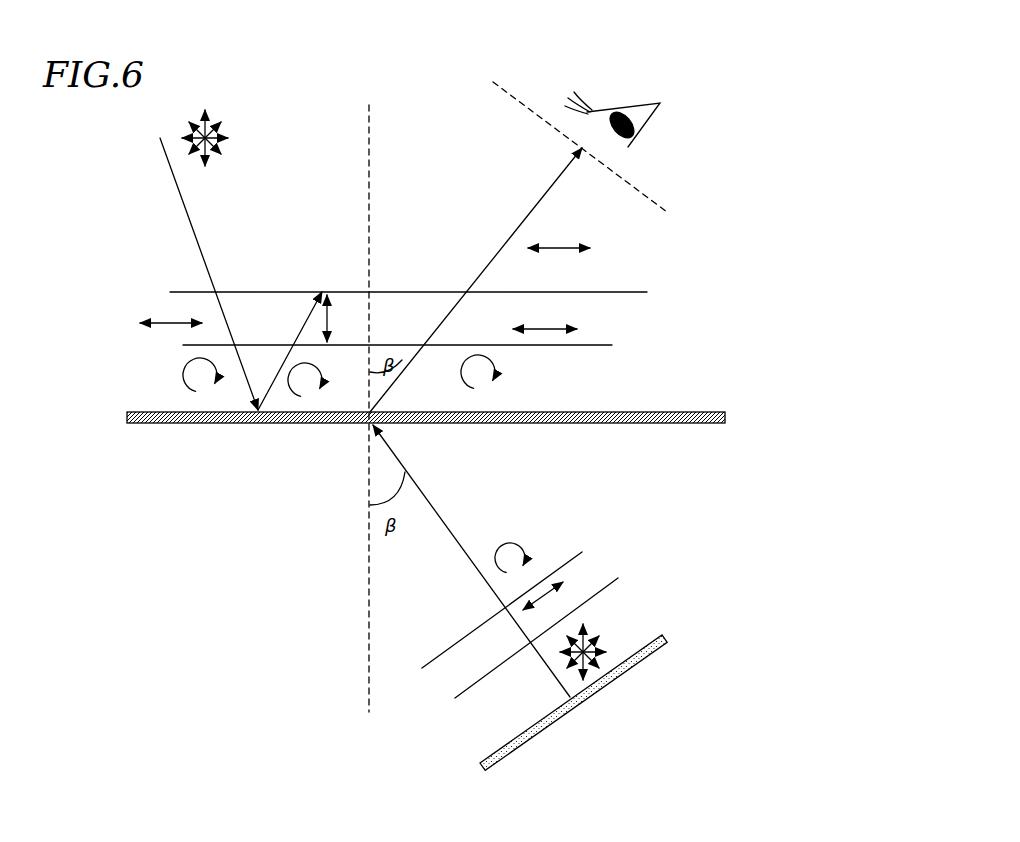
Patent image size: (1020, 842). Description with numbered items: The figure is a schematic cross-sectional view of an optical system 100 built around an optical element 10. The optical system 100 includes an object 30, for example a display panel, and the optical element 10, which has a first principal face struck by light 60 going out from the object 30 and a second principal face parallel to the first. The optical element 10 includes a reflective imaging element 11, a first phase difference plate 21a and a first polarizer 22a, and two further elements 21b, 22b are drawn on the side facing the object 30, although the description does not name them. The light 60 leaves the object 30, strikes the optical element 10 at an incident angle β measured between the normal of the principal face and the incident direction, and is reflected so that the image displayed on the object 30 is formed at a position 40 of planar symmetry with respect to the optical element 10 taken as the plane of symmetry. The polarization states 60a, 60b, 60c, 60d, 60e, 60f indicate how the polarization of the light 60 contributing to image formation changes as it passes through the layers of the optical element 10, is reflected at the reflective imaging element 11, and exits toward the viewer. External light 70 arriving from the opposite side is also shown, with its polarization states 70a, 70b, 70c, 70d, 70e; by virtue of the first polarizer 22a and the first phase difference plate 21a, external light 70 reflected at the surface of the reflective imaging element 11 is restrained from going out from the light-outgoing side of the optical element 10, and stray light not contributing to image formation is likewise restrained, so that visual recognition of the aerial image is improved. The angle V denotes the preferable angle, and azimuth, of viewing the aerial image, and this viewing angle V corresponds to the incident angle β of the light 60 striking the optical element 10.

The optical element 10 is at (772, 262).
The reflective imaging element 11 is at (700, 412).
The first phase difference plate 21a is at (612, 345).
The first polarizer 22a is at (647, 292).
The first retardation layer (lower) 21b is at (582, 552).
The second retardation layer (lower) 22b is at (618, 578).
The object 30 is at (665, 640).
The image forming position 40 is at (667, 212).
The light 60 is at (437, 508).
The polarization state of light 60a is at (601, 649).
The polarization state of light 60b is at (561, 592).
The polarization state of light 60c is at (526, 554).
The polarization state of light 60d is at (496, 374).
The polarization state of light 60e is at (545, 316).
The polarization state of light 60f is at (559, 236).
The external light 70 is at (186, 217).
The polarization state of external light 70a is at (225, 138).
The polarization state of external light 70b is at (171, 309).
The polarization state of external light 70c is at (182, 374).
The polarization state of external light 70d is at (323, 379).
The polarization state of external light 70e is at (345, 318).
The optical system 100 is at (712, 90).
The viewing angle V is at (645, 105).